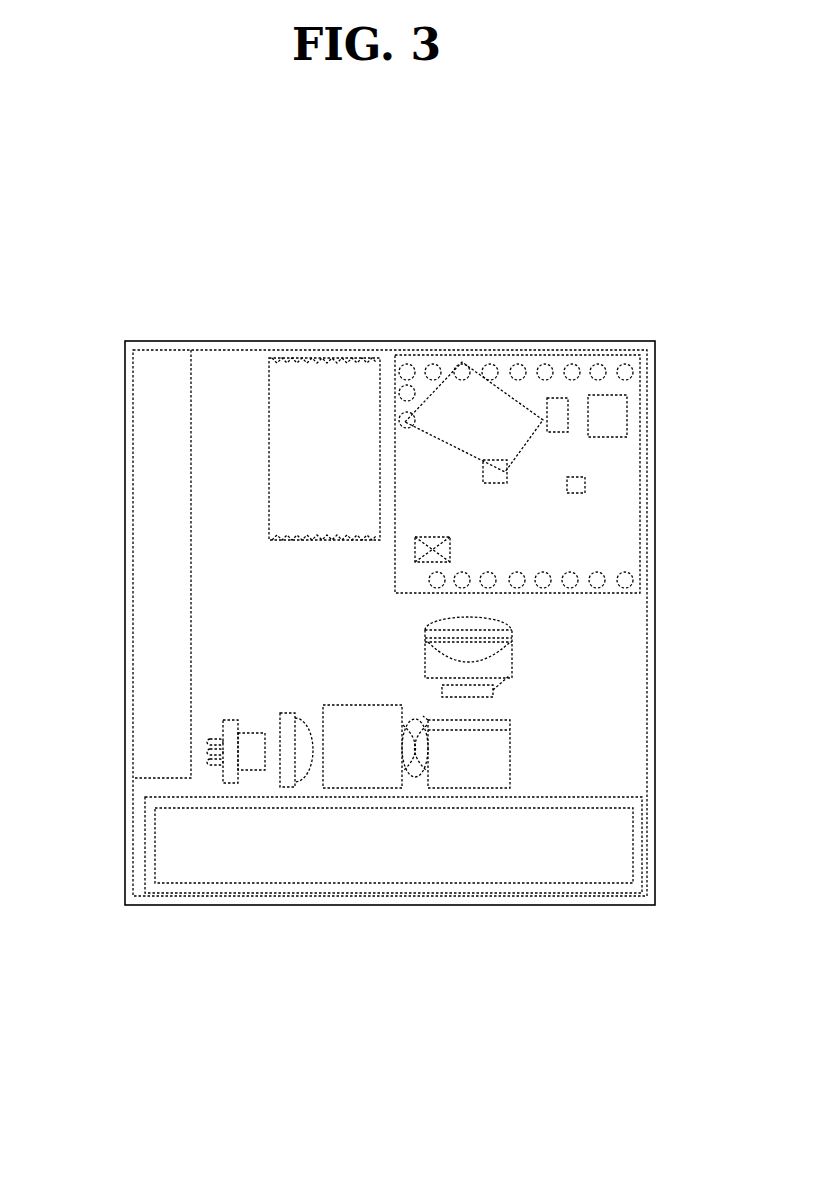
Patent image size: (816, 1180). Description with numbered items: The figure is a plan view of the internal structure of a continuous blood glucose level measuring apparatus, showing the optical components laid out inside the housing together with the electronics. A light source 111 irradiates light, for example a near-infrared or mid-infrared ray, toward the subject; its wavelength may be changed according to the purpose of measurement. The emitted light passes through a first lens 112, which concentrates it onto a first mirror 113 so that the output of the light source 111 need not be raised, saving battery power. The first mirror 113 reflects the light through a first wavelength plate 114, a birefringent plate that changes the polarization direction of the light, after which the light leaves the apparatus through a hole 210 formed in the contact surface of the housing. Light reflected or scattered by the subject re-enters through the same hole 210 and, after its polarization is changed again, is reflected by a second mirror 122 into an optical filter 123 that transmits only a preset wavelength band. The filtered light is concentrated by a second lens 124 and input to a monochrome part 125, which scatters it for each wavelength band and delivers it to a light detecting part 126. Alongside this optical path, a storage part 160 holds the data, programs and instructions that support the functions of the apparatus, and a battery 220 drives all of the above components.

The light source 111 is at (226, 783).
The first lens 112 is at (287, 787).
The first mirror 113 is at (368, 775).
The first wavelength plate 114 is at (403, 722).
The second mirror 122 is at (492, 760).
The optical filter 123 is at (510, 675).
The second lens 124 is at (510, 632).
The monochrome part 125 is at (468, 405).
The light detecting part 126 is at (162, 547).
The storage part 160 is at (620, 486).
The hole 210 is at (423, 716).
The battery 220 is at (170, 863).